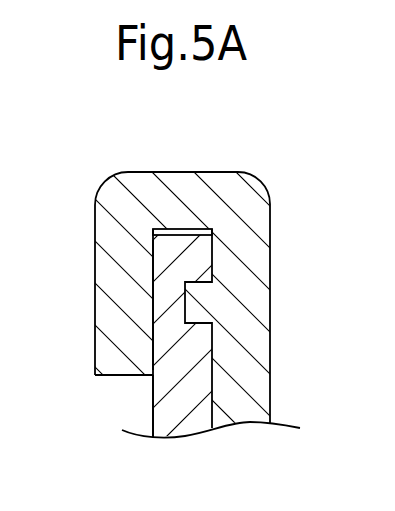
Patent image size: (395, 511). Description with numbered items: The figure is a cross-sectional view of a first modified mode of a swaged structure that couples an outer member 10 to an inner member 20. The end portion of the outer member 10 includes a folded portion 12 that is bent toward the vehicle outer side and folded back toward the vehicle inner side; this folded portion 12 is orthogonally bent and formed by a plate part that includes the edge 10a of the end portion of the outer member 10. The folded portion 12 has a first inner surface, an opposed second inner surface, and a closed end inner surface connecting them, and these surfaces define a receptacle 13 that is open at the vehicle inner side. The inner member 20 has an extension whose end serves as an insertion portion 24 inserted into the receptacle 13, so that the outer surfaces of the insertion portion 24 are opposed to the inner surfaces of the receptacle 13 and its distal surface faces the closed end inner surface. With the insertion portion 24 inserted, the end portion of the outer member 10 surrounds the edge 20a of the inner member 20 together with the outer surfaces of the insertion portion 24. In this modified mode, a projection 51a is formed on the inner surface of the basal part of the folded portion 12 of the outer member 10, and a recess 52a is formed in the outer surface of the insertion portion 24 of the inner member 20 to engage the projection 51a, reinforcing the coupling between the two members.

The outer member 10 is at (280, 353).
The folded portion 12 is at (115, 193).
The edge 10a is at (120, 377).
The inner member 20 is at (143, 404).
The edge 20a is at (182, 229).
The insertion portion 24 is at (170, 295).
The receptacle 13 is at (157, 353).
The projection 51a is at (200, 296).
The recess 52a is at (208, 314).